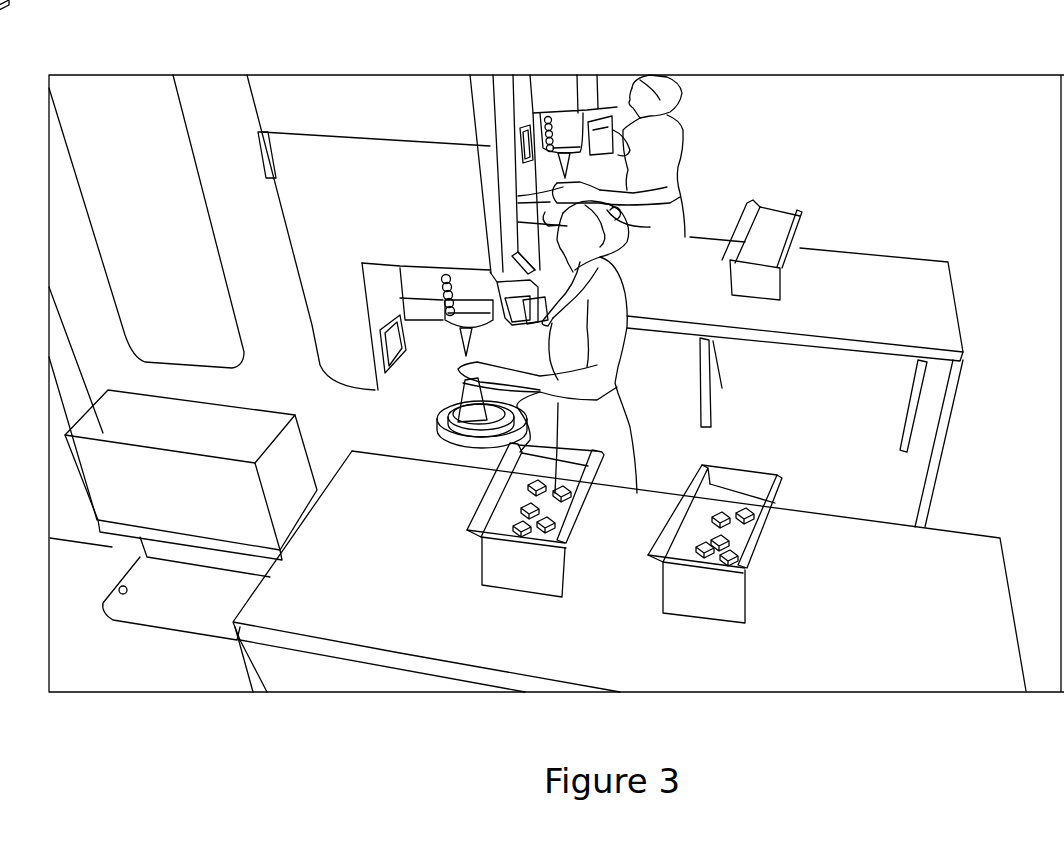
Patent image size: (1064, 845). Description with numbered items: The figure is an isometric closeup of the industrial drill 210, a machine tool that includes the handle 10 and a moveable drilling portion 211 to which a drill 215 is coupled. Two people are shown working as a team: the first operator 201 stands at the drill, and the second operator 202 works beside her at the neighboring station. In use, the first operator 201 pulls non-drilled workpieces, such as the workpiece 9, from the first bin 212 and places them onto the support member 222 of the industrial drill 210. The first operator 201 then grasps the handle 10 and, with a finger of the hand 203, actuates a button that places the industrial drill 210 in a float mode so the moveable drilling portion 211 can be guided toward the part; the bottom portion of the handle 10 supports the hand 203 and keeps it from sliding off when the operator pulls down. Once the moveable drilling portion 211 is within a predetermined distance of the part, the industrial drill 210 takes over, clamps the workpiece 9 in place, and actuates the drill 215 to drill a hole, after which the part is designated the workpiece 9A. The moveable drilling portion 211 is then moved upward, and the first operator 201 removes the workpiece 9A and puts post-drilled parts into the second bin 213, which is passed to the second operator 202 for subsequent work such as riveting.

The industrial drill 210 is at (213, 96).
The moveable drilling portion 211 is at (385, 160).
The hand 203 is at (490, 273).
The handle 10 is at (540, 320).
The drill 215 is at (468, 350).
The support member 222 is at (447, 450).
The first operator 201 is at (618, 355).
The second operator 202 is at (682, 132).
The second bin 213 is at (520, 583).
The first bin 212 is at (755, 557).
The drilled workpiece 9A is at (515, 525).
The workpiece 9 is at (668, 590).